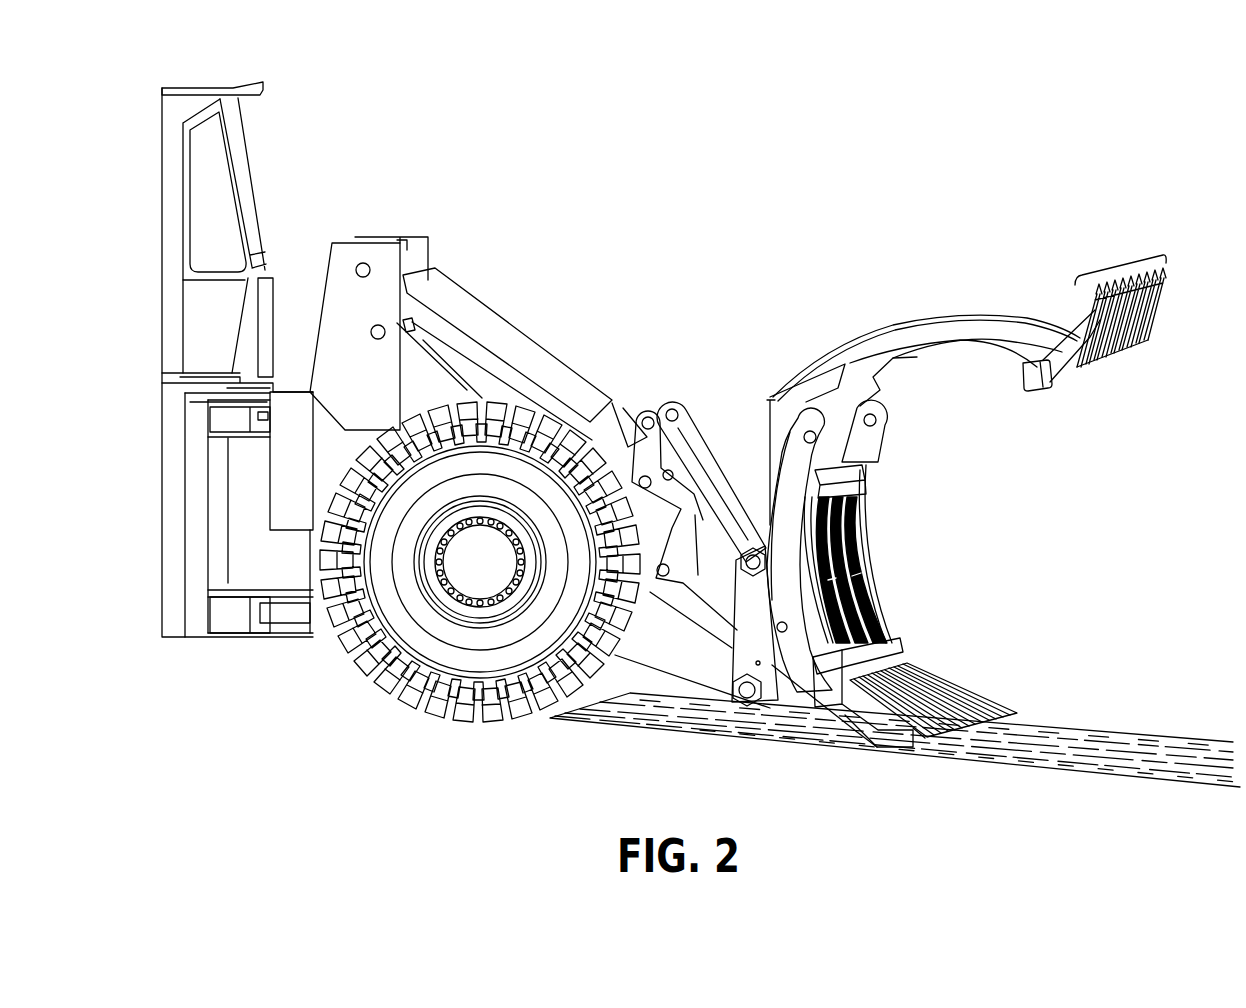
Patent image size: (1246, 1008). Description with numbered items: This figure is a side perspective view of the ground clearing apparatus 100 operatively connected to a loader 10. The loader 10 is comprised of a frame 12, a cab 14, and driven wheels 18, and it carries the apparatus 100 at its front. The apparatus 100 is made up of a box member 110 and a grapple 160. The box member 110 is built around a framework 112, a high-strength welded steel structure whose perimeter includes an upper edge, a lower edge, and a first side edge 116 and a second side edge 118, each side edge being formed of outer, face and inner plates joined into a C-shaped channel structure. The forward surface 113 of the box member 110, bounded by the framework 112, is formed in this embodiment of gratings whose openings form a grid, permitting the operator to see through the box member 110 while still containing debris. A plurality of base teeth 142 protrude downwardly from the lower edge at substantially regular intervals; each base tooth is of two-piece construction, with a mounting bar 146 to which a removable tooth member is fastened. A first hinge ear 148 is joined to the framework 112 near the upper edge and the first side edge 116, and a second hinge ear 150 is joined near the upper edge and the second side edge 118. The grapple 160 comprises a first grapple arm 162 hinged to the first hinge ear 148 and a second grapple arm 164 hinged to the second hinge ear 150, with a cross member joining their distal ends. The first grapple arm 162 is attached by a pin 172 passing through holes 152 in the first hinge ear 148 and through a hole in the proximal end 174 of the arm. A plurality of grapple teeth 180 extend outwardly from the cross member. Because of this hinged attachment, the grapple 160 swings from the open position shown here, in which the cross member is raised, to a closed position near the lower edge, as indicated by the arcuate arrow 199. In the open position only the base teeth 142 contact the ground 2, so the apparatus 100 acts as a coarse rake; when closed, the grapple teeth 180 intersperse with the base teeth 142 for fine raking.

The ground 2 is at (1163, 737).
The loader 10 is at (371, 127).
The frame 12 is at (273, 638).
The cab 14 is at (236, 86).
The driven wheels 18 is at (521, 397).
The ground clearing apparatus 100 is at (850, 182).
The box member 110 is at (936, 531).
The framework 112 is at (876, 567).
The forward surface 113 is at (876, 591).
The first side edge 116 is at (810, 622).
The second side edge 118 is at (873, 533).
The base teeth 142 is at (940, 688).
The mounting bar 146 is at (955, 706).
The first hinge ear 148 is at (803, 464).
The second hinge ear 150 is at (893, 413).
The holes 152 is at (800, 462).
The grapple 160 is at (991, 386).
The first grapple arm 162 is at (870, 335).
The second grapple arm 164 is at (1000, 310).
The pin 172 is at (804, 434).
The proximal end 174 is at (772, 398).
The grapple teeth 180 is at (1117, 265).
The arcuate arrow 199 is at (939, 673).